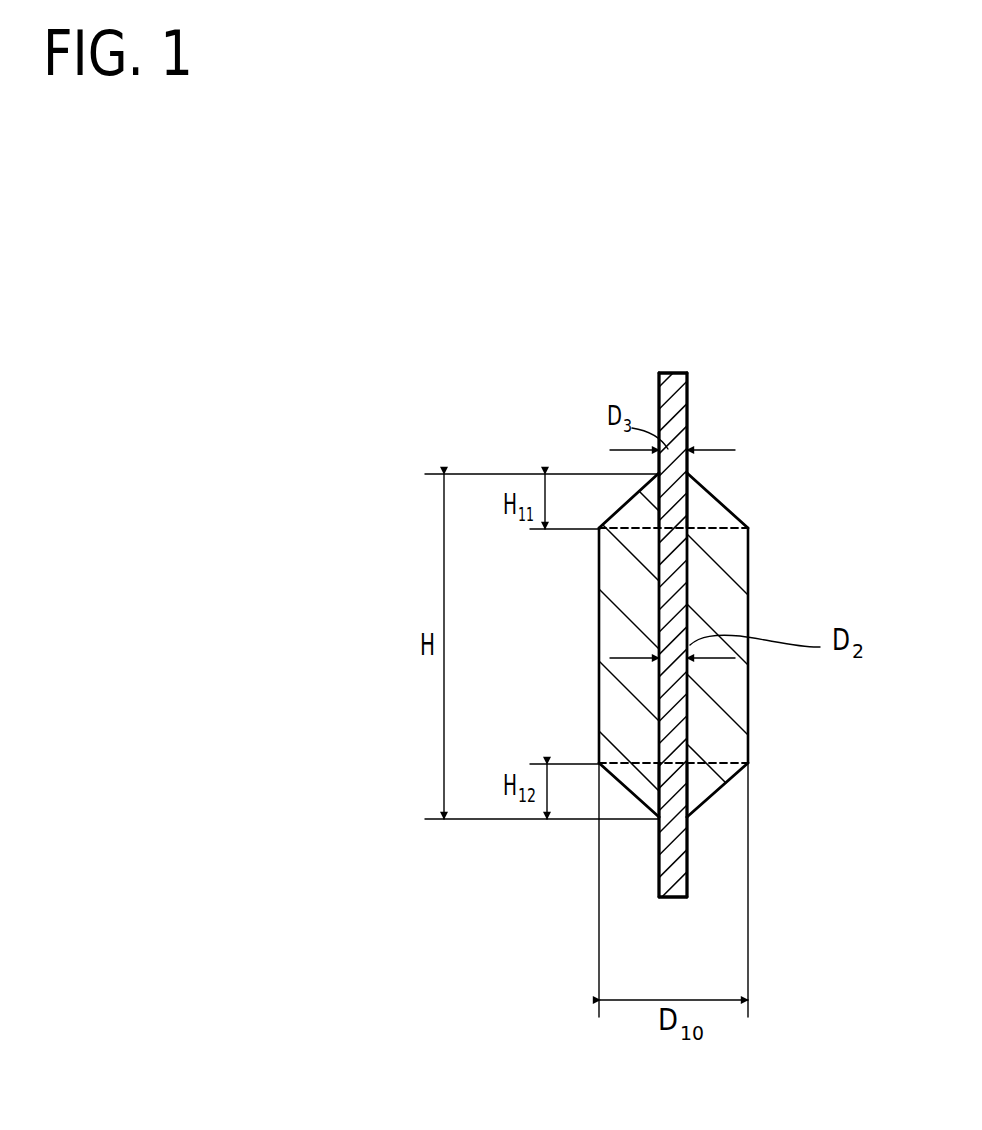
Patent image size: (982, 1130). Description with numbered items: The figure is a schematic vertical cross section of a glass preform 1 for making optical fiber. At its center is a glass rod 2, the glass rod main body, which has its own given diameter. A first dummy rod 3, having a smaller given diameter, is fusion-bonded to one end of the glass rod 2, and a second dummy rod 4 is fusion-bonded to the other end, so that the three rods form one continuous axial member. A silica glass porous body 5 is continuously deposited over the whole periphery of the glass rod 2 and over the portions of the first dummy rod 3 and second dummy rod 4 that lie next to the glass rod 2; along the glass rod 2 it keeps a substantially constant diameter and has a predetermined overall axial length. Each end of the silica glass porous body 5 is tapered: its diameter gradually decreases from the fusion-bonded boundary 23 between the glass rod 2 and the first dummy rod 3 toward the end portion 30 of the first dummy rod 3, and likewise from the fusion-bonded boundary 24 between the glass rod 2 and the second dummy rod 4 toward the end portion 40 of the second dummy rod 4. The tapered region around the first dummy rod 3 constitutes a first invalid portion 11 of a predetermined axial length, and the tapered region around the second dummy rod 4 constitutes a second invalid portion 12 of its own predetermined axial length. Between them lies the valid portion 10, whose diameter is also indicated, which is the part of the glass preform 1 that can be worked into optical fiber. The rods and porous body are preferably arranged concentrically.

The glass preform 1 is at (706, 579).
The glass rod 2 is at (744, 653).
The first dummy rod 3 is at (677, 420).
The second dummy rod 4 is at (678, 870).
The silica glass porous body 5 is at (608, 594).
The valid portion 10 is at (706, 650).
The first invalid portion 11 is at (702, 513).
The second invalid portion 12 is at (713, 777).
The fusion-bonded boundary 23 is at (692, 497).
The fusion-bonded boundary 24 is at (686, 750).
The end portion 30 is at (668, 374).
The end portion 40 is at (672, 898).